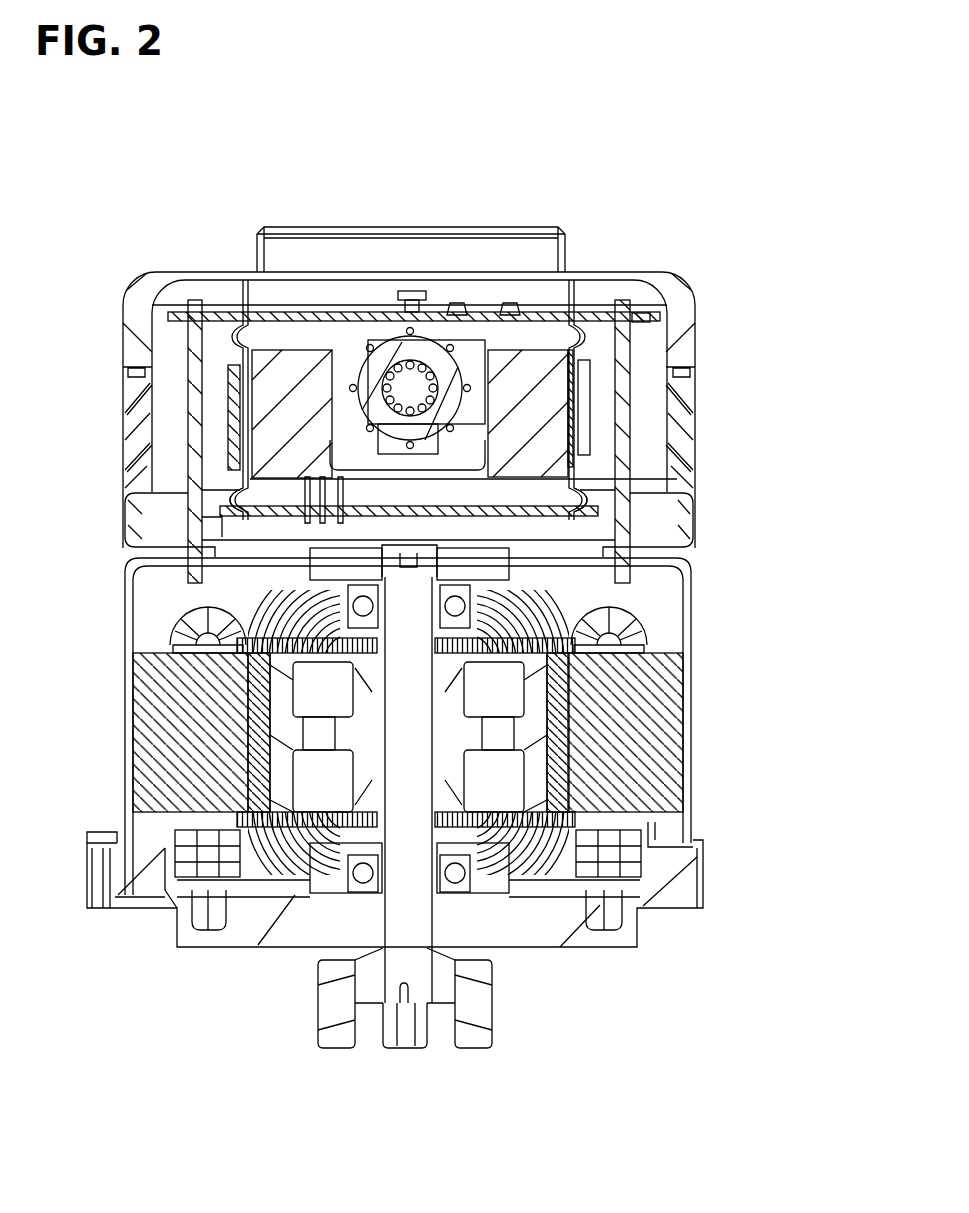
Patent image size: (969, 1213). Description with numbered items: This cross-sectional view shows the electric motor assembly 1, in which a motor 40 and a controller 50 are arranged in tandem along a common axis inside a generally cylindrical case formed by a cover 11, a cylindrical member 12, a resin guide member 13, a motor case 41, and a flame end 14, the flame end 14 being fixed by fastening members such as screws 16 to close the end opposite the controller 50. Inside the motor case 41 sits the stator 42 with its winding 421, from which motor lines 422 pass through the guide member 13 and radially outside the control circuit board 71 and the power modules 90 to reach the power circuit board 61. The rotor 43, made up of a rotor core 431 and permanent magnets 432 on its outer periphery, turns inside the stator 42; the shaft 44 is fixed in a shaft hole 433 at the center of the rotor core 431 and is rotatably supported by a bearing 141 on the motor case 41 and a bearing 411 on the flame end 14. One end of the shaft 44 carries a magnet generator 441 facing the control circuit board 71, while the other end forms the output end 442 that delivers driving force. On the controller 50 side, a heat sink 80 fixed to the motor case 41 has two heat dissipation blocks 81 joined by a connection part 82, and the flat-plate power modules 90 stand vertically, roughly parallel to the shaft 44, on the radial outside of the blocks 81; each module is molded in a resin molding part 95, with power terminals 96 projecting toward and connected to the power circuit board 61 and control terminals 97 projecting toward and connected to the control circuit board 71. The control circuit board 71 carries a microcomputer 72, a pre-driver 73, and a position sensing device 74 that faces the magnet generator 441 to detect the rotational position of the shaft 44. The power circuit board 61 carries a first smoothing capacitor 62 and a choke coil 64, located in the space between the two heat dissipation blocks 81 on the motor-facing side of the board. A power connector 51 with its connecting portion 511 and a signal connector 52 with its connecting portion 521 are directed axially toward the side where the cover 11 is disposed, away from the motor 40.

The electric motor assembly 1 is at (153, 998).
The cover 11 is at (678, 278).
The cylindrical member 12 is at (130, 418).
The guide member 13 is at (130, 526).
The flame end 14 is at (627, 922).
The screws 16 is at (415, 291).
The motor 40 is at (768, 720).
The motor case 41 is at (688, 706).
The stator 42 is at (440, 732).
The winding 421 is at (187, 628).
The motor lines 422 is at (185, 387).
The rotor 43 is at (573, 729).
The rotor core 431 is at (540, 789).
The permanent magnets 432 is at (568, 763).
The shaft hole 433 is at (383, 753).
The shaft 44 is at (400, 922).
The magnet generator 441 is at (331, 657).
The output end 442 is at (482, 992).
The bearing 411 is at (368, 606).
The bearing 141 is at (368, 874).
The controller 50 is at (768, 433).
The power connector 51 is at (540, 245).
The connecting portion 511 is at (515, 228).
The signal connector 52 is at (287, 245).
The connecting portion 521 is at (316, 228).
The power circuit board 61 is at (660, 316).
The first smoothing capacitor 62 is at (462, 355).
The choke coil 64 is at (370, 368).
The control circuit board 71 is at (598, 512).
The microcomputer 72 is at (225, 488).
The pre-driver 73 is at (205, 496).
The position sensing device 74 is at (220, 532).
The heat sink 80 is at (583, 460).
The heat dissipation blocks 81 is at (265, 358).
The connection part 82 is at (222, 457).
The power modules 90 is at (597, 434).
The molding part 95 is at (615, 408).
The power terminals 96 is at (625, 335).
The control terminals 97 is at (587, 490).